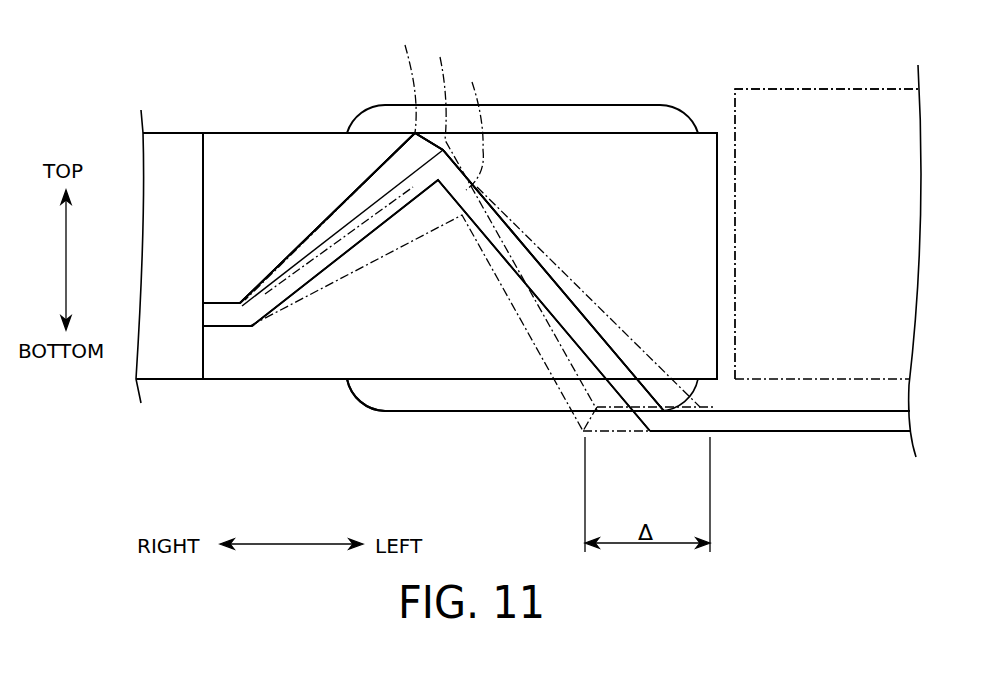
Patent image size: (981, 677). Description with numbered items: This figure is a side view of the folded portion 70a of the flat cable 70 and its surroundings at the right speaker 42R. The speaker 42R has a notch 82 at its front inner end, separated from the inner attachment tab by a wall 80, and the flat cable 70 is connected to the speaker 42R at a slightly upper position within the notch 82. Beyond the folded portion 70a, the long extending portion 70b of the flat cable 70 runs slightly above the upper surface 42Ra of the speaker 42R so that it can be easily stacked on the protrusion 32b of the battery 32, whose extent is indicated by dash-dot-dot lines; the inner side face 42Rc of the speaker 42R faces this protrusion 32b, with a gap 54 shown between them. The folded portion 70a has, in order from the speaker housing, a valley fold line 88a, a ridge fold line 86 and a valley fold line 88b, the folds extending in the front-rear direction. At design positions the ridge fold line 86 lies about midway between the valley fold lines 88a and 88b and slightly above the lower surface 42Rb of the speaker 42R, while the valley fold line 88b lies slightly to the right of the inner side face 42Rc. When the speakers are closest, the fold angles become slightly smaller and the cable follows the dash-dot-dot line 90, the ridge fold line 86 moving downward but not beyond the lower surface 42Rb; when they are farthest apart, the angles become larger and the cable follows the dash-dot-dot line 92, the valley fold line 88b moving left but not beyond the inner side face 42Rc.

The wall 80 is at (262, 158).
The notch 82 is at (203, 228).
The right speaker 42R is at (303, 89).
The upper surface of the speaker 42Ra is at (458, 382).
The lower surface of the speaker 42Rb is at (510, 133).
The inner side face of the speaker 42Rc is at (718, 234).
The gap 54 is at (538, 116).
The battery 32 is at (840, 100).
The protrusion 32b is at (826, 234).
The flat cable 70 is at (535, 188).
The folded portion 70a is at (452, 272).
The long extending portion 70b is at (873, 421).
The ridge fold line 86 is at (472, 210).
The valley fold line 88a is at (246, 312).
The valley fold line 88b is at (590, 420).
The dash-dot-dot line 90 is at (330, 215).
The dash-dot-dot line 92 is at (382, 260).